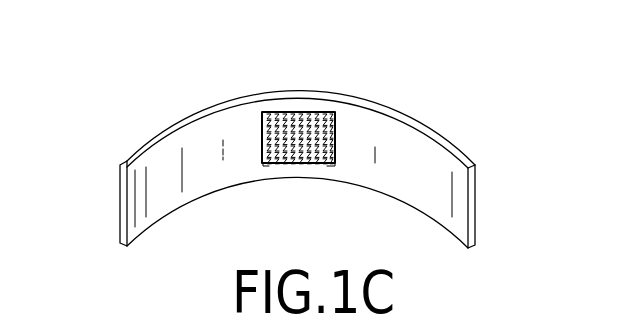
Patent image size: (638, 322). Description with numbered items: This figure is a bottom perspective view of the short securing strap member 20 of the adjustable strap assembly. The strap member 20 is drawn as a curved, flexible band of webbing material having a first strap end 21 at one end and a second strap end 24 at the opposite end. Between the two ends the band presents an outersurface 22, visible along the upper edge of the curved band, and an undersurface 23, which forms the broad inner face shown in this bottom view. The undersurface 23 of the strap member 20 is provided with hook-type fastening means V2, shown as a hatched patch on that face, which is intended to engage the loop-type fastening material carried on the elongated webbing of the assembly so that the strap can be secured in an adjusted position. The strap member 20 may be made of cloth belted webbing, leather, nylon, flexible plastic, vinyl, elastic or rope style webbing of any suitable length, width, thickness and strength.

The securing strap member 20 is at (298, 78).
The first strap end 21 is at (470, 205).
The outersurface 22 is at (365, 103).
The undersurface 23 is at (367, 171).
The second strap end 24 is at (127, 203).
The hook-type fastening means V2 is at (291, 163).